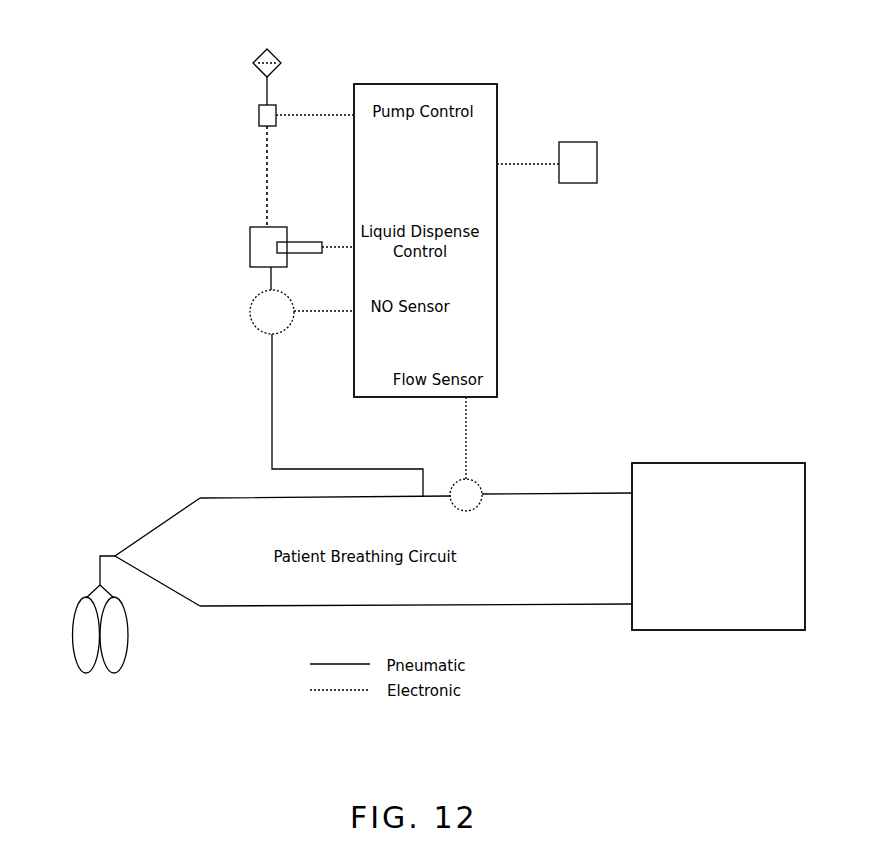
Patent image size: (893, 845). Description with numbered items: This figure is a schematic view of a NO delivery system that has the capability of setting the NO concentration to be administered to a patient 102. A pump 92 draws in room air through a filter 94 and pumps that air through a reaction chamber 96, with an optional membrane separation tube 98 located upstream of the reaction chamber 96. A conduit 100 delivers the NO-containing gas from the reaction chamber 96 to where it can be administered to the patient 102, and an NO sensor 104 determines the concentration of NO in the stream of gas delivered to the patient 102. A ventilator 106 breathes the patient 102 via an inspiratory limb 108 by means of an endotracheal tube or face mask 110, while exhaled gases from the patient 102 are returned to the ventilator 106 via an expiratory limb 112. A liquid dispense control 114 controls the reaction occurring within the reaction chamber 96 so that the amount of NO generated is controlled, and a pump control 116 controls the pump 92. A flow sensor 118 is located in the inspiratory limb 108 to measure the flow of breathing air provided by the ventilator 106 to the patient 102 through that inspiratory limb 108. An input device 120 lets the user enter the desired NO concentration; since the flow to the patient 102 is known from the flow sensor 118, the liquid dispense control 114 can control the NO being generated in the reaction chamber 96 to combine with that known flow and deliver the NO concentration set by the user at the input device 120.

The pump 92 is at (258, 110).
The filter 94 is at (278, 56).
The reaction chamber 96 is at (248, 254).
The membrane separation tube 98 is at (266, 178).
The conduit 100 is at (272, 420).
The patient 102 is at (128, 637).
The NO sensor 104 is at (252, 323).
The ventilator 106 is at (706, 463).
The inspiratory limb 108 is at (563, 493).
The endotracheal tube or face mask 110 is at (100, 572).
The expiratory limb 112 is at (510, 606).
The liquid dispense control 114 is at (488, 243).
The pump control 116 is at (485, 105).
The flow sensor 118 is at (475, 480).
The input device 120 is at (590, 159).